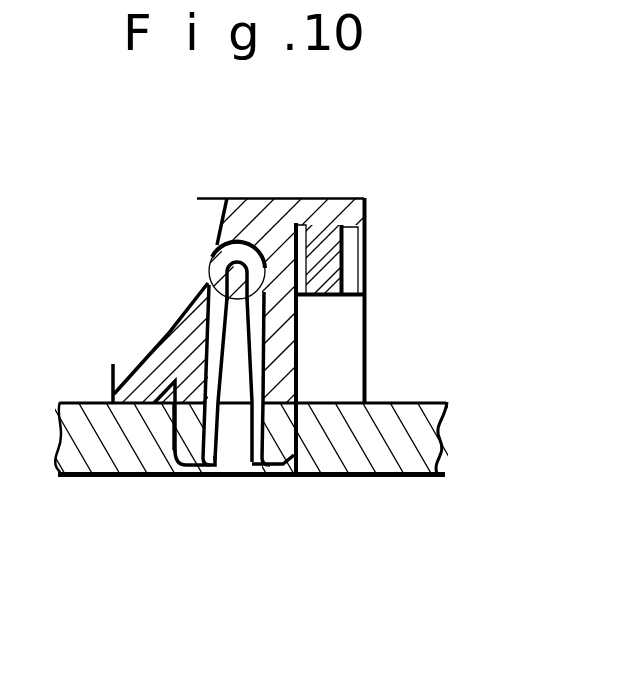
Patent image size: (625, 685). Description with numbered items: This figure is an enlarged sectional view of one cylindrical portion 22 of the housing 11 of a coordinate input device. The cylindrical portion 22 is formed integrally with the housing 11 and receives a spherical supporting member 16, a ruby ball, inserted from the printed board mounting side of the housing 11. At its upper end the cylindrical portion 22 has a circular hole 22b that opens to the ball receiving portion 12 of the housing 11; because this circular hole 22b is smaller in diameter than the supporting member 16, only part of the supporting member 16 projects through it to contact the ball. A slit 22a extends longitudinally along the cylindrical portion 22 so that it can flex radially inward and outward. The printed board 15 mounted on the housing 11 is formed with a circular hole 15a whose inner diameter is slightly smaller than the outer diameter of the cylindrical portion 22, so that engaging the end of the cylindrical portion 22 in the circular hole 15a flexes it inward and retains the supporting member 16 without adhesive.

The housing 11 is at (323, 198).
The ball receiving portion 12 is at (147, 356).
The printed board 15 is at (398, 400).
The circular hole 15a is at (183, 475).
The supporting member 16 is at (206, 272).
The cylindrical portion 22 is at (298, 340).
The slit 22a is at (254, 475).
The circular hole 22b is at (213, 272).